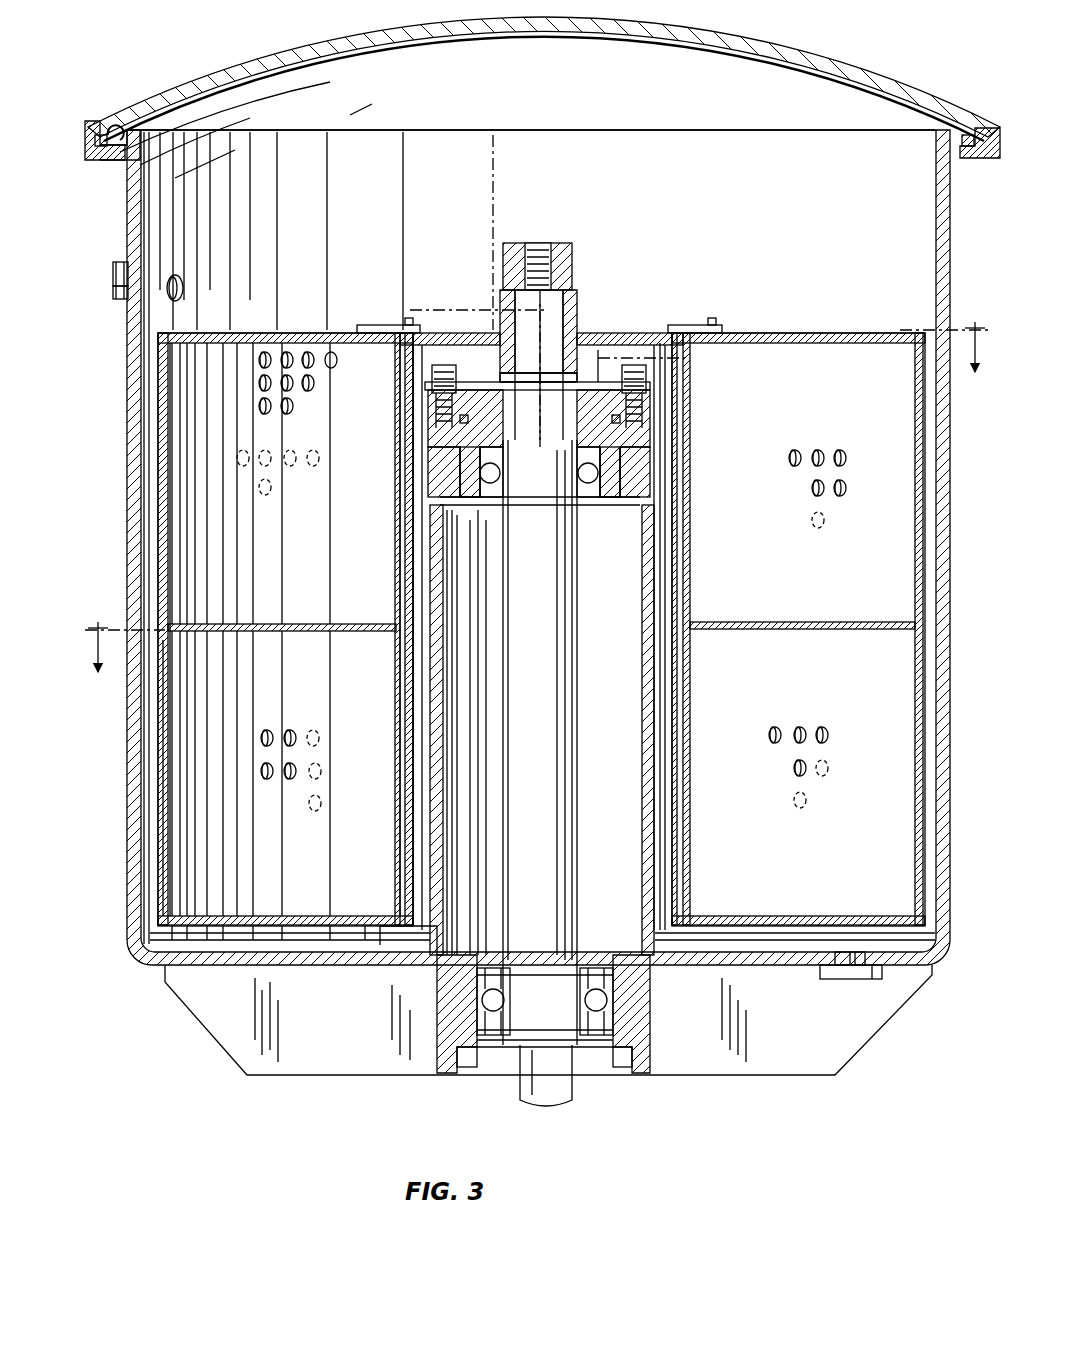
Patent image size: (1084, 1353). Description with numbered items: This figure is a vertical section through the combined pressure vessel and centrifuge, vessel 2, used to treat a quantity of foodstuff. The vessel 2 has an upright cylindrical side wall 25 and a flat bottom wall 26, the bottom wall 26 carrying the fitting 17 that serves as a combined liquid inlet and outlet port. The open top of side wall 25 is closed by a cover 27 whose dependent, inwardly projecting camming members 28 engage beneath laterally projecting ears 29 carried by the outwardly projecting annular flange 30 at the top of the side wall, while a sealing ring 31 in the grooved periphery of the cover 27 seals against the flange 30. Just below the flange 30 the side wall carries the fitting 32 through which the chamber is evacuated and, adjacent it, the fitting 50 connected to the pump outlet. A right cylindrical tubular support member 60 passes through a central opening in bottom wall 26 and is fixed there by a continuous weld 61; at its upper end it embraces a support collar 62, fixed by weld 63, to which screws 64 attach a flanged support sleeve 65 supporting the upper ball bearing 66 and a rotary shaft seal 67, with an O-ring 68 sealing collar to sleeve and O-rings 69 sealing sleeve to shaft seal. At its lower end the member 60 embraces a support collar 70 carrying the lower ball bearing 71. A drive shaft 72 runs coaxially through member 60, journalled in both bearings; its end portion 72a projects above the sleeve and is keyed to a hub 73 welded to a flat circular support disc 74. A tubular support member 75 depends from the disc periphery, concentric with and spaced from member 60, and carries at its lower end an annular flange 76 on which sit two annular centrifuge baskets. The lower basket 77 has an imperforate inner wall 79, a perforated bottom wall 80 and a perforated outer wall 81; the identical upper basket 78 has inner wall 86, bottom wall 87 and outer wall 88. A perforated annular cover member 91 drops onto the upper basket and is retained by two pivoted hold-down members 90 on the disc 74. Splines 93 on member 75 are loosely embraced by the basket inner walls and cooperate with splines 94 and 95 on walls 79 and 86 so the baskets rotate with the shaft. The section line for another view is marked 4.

The vessel 2 is at (135, 965).
The section line 4- 4 is at (537, 512).
The fitting 17 is at (862, 982).
The side wall 25 is at (128, 250).
The bottom wall 26 is at (315, 960).
The cover 27 is at (290, 47).
The camming members 28 is at (104, 160).
The ears 29 is at (106, 132).
The annular flange 30 is at (122, 160).
The sealing ring 31 is at (98, 142).
The fitting 32 is at (183, 290).
The fitting 50 is at (122, 300).
The tubular support member 60 is at (430, 528).
The weld 61 is at (437, 958).
The support collar 62 is at (428, 478).
The weld 63 is at (428, 450).
The screws 64 is at (466, 333).
The flanged support sleeve 65 is at (448, 385).
The upper ball bearing 66 is at (497, 505).
The rotary shaft seal 67 is at (648, 388).
The O-ring 68 is at (539, 370).
The O-rings 69 is at (618, 410).
The support collar 70 is at (634, 960).
The ball bearing 71 is at (600, 964).
The drive shaft 72 is at (580, 884).
The end portion 72a is at (572, 268).
The hub 73 is at (577, 305).
The support disc 74 is at (632, 333).
The tubular support member 75 is at (690, 358).
The flange 76 is at (693, 936).
The lower centrifuge basket 77 is at (158, 795).
The upper centrifuge basket 78 is at (158, 530).
The inner wall 79 is at (405, 878).
The bottom wall 80 is at (297, 916).
The outer wall 81 is at (167, 818).
The inner wall 86 is at (405, 558).
The bottom wall 87 is at (300, 631).
The outer wall 88 is at (168, 505).
The hold-down members 90 is at (378, 325).
The cover member 91 is at (312, 333).
The splines 93 is at (682, 552).
The splines 94 is at (410, 730).
The splines 95 is at (400, 580).